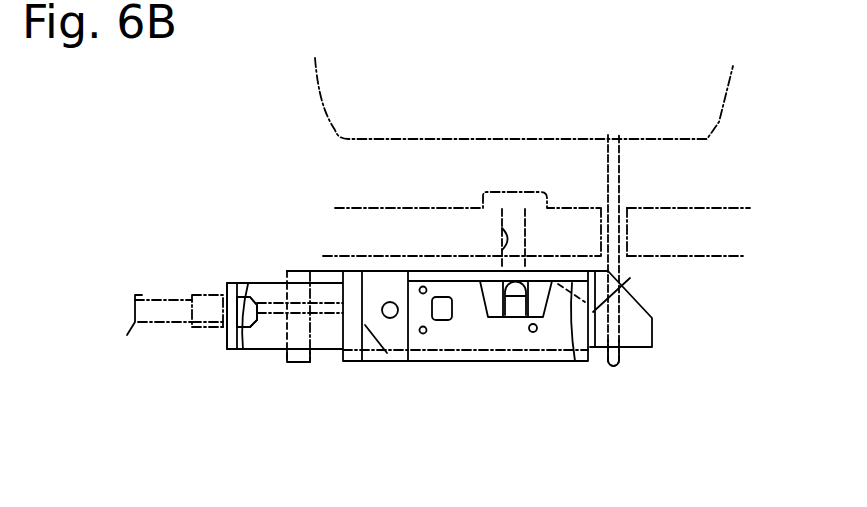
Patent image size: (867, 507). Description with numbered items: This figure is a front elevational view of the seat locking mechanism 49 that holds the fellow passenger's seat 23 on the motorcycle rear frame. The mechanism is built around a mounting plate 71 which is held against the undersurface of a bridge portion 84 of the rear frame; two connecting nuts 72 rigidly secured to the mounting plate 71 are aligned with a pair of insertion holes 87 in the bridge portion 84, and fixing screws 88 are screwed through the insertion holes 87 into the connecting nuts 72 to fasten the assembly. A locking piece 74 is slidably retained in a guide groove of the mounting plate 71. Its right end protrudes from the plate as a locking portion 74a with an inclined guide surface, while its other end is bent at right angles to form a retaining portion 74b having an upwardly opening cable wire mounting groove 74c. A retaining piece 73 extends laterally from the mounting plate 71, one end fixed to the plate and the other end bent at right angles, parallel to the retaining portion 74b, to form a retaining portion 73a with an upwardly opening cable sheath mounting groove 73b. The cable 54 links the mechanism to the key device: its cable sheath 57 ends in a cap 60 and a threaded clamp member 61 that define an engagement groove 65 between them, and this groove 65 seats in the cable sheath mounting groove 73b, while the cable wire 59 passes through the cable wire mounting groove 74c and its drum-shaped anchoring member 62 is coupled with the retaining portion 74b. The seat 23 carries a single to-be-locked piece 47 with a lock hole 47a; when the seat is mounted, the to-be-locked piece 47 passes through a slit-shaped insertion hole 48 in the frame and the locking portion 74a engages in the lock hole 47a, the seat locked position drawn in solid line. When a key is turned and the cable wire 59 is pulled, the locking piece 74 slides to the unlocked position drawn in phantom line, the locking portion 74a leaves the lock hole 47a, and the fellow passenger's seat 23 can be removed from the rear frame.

The fellow passenger's seat 23 is at (733, 103).
The to-be-locked piece 47 is at (603, 137).
The lock hole 47a is at (637, 352).
The slit-shaped insertion hole 48 is at (622, 200).
The seat locking mechanism 49 is at (462, 363).
The cable 54 is at (188, 287).
The cable sheath 57 is at (160, 298).
The cable wire 59 is at (265, 355).
The cap 60 is at (242, 353).
The clamp member 61 is at (210, 293).
The anchoring member 62 is at (387, 353).
The engagement groove 65 is at (230, 283).
The mounting plate 71 is at (578, 357).
The connecting nut 72 is at (508, 353).
The retaining piece 73 is at (260, 288).
The retaining portion 73a is at (248, 290).
The cable sheath mounting groove 73b is at (202, 327).
The locking piece 74 is at (393, 283).
The locking portion 74a is at (630, 290).
The retaining portion 74b is at (340, 353).
The cable wire mounting groove 74c is at (320, 357).
The bridge portion 84 is at (717, 208).
The insertion hole 87 is at (497, 228).
The fixing screw 88 is at (515, 192).